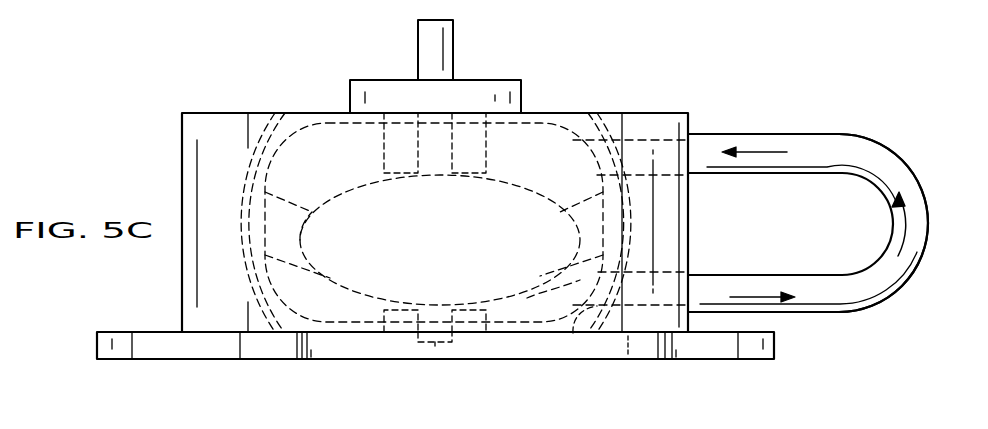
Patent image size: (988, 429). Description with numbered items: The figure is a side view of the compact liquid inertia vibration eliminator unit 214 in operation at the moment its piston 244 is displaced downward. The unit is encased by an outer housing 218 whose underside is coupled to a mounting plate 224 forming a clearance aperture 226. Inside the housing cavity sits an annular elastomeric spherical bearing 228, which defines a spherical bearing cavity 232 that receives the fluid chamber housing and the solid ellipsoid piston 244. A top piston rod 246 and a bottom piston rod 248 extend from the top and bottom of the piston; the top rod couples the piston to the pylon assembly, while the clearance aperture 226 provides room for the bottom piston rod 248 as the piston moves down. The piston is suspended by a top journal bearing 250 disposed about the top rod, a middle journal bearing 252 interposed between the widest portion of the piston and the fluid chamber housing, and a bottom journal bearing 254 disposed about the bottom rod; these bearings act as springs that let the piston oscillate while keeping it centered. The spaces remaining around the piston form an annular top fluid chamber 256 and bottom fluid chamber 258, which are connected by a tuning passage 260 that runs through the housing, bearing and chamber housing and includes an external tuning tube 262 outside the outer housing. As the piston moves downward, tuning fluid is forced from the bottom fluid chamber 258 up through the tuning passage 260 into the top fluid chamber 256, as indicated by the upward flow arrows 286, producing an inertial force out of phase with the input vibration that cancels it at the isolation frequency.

The compact liquid inertia vibration eliminator unit 214 is at (203, 77).
The outer housing 218 is at (182, 158).
The mounting plate 224 is at (97, 347).
The clearance aperture 226 is at (240, 343).
The spherical bearing 228 is at (255, 297).
The spherical bearing cavity 232 is at (577, 333).
The piston 244 is at (527, 298).
The top piston rod 246 is at (453, 50).
The bottom piston rod 248 is at (435, 350).
The top journal bearing 250 is at (471, 163).
The middle journal bearing 252 is at (580, 232).
The bottom journal bearing 254 is at (395, 307).
The top fluid chamber 256 is at (325, 156).
The bottom fluid chamber 258 is at (330, 283).
The tuning passage 260 is at (845, 105).
The external tuning tube 262 is at (808, 223).
The upward flow arrows 286 is at (905, 225).